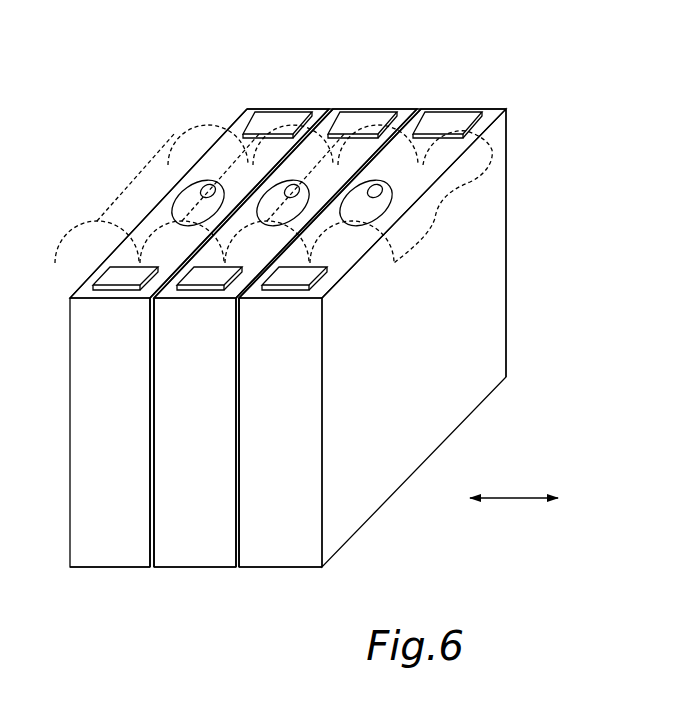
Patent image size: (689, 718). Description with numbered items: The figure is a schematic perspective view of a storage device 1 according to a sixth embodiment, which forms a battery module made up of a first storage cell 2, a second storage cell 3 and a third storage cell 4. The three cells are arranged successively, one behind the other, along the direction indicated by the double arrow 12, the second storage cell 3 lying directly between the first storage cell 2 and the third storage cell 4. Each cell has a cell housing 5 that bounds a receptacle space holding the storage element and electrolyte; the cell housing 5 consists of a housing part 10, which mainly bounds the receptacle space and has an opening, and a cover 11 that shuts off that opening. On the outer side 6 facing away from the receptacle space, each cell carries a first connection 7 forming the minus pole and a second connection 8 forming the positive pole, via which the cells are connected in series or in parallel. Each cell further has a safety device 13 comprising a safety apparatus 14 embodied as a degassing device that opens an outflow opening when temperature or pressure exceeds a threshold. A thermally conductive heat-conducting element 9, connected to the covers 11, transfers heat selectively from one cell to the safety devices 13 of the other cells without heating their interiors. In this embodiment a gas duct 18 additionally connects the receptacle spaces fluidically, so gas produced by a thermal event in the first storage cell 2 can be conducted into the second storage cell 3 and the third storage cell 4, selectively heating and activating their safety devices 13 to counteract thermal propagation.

The storage device 1 is at (501, 105).
The first storage cell 2 is at (95, 430).
The second storage cell 3 is at (222, 570).
The third storage cell 4 is at (293, 570).
The cell housing 5 is at (81, 568).
The outer side 6 is at (406, 117).
The first connection 7 is at (120, 284).
The second connection 8 is at (283, 116).
The heat-conducting element 9 is at (207, 173).
The housing part 10 is at (510, 306).
The cover 11 is at (238, 148).
The double arrow 12 is at (515, 496).
The safety device 13 is at (290, 180).
The safety apparatus 14 is at (178, 213).
The gas duct 18 is at (151, 159).